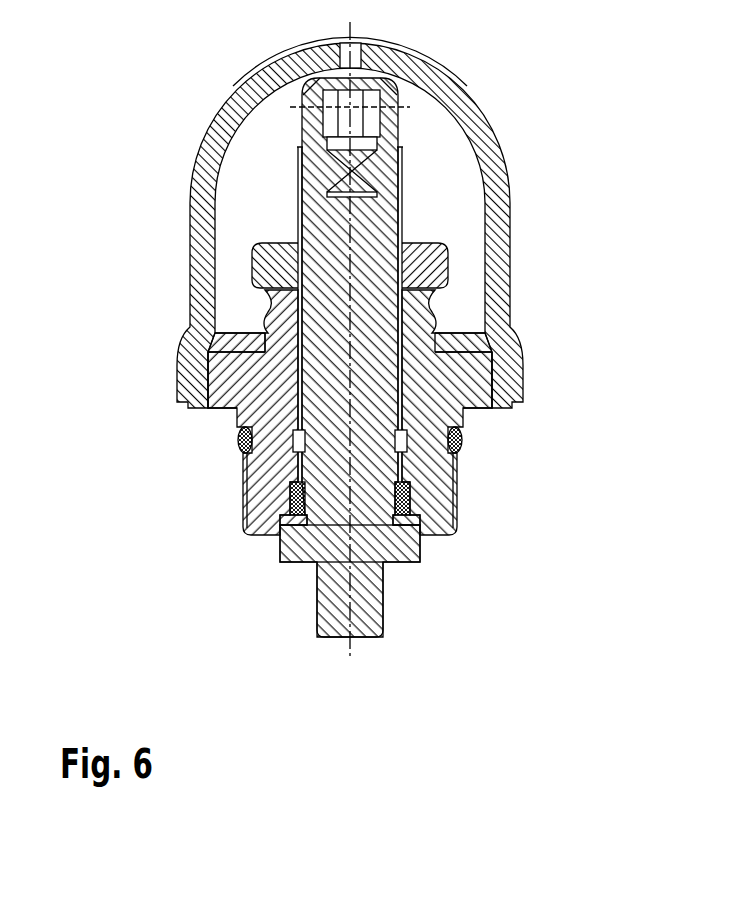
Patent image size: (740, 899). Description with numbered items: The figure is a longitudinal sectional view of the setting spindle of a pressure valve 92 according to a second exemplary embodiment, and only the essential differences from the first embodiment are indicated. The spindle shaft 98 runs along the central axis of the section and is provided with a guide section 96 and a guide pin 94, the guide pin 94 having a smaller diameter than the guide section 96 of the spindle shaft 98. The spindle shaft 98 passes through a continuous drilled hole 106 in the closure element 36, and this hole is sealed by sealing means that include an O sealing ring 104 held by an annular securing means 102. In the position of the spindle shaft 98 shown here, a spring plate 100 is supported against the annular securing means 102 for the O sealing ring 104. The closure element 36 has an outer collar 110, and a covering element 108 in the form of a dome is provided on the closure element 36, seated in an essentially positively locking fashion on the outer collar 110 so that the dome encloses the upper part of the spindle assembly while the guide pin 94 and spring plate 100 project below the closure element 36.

The pressure valve 92 is at (366, 341).
The covering element 108 is at (503, 253).
The spindle shaft 98 is at (377, 353).
The outer collar 110 is at (487, 372).
The closure element 36 is at (237, 373).
The guide section 96 is at (458, 440).
The continuous drilled hole 106 is at (305, 468).
The O sealing ring 104 is at (297, 498).
The annular securing means 102 is at (412, 522).
The spring plate 100 is at (405, 545).
The guide pin 94 is at (372, 615).